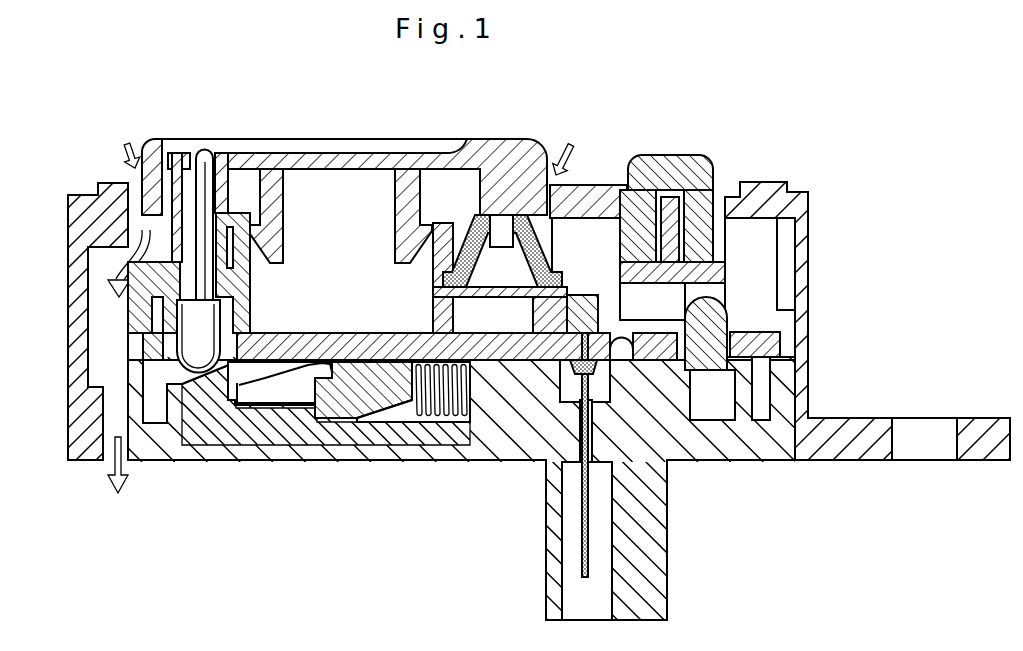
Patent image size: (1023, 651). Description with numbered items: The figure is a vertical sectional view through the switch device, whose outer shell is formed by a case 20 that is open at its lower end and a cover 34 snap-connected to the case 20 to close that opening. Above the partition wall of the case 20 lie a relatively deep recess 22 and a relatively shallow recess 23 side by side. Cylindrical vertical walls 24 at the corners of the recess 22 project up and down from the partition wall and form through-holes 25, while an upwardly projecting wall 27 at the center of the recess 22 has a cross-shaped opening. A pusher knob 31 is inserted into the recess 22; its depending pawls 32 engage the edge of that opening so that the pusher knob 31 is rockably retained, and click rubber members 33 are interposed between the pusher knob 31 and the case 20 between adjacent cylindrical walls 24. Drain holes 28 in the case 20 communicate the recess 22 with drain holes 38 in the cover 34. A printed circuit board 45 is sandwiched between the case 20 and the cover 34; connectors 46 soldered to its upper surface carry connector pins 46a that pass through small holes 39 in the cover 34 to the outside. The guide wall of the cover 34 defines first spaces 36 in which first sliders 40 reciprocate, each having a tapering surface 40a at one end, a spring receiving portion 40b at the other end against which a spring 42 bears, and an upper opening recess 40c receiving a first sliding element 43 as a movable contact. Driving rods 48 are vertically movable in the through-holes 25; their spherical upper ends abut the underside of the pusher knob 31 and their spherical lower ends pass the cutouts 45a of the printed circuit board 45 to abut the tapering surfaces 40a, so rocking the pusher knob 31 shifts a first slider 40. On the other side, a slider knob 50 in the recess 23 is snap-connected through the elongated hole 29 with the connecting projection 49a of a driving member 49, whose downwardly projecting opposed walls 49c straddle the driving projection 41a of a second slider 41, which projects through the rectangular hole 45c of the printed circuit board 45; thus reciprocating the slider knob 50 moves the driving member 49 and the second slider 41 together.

The case 20 is at (62, 212).
The recess 22 is at (150, 245).
The recess 23 is at (610, 185).
The cylindrical vertical wall 24 is at (230, 225).
The through-hole 25 is at (176, 248).
The upwardly projecting wall 27 is at (462, 228).
The drain hole 28 is at (95, 258).
The elongated hole 29 is at (703, 190).
The pusher knob 31 is at (455, 143).
The pawl 32 is at (280, 250).
The click rubber member 33 is at (510, 213).
The cover 34 is at (520, 462).
The first space 36 is at (170, 398).
The drain hole 38 is at (110, 403).
The small hole 39 is at (597, 437).
The first slider 40 is at (300, 420).
The tapering surface 40a is at (197, 423).
The spring receiving portion 40b is at (403, 387).
The upper opening recess 40c is at (327, 380).
The second slider 41 is at (727, 382).
The driving projection 41a is at (713, 312).
The spring 42 is at (445, 410).
The first sliding element 43 is at (267, 380).
The printed circuit board 45 is at (332, 333).
The cutout 45a is at (148, 350).
The rectangular hole 45c is at (733, 335).
The connector 46 is at (582, 295).
The connector pin 46a is at (590, 560).
The driving rod 48 is at (196, 162).
The driving member 49 is at (727, 268).
The connecting projection 49a is at (687, 223).
The opposed wall 49c is at (717, 292).
The slider knob 50 is at (657, 157).